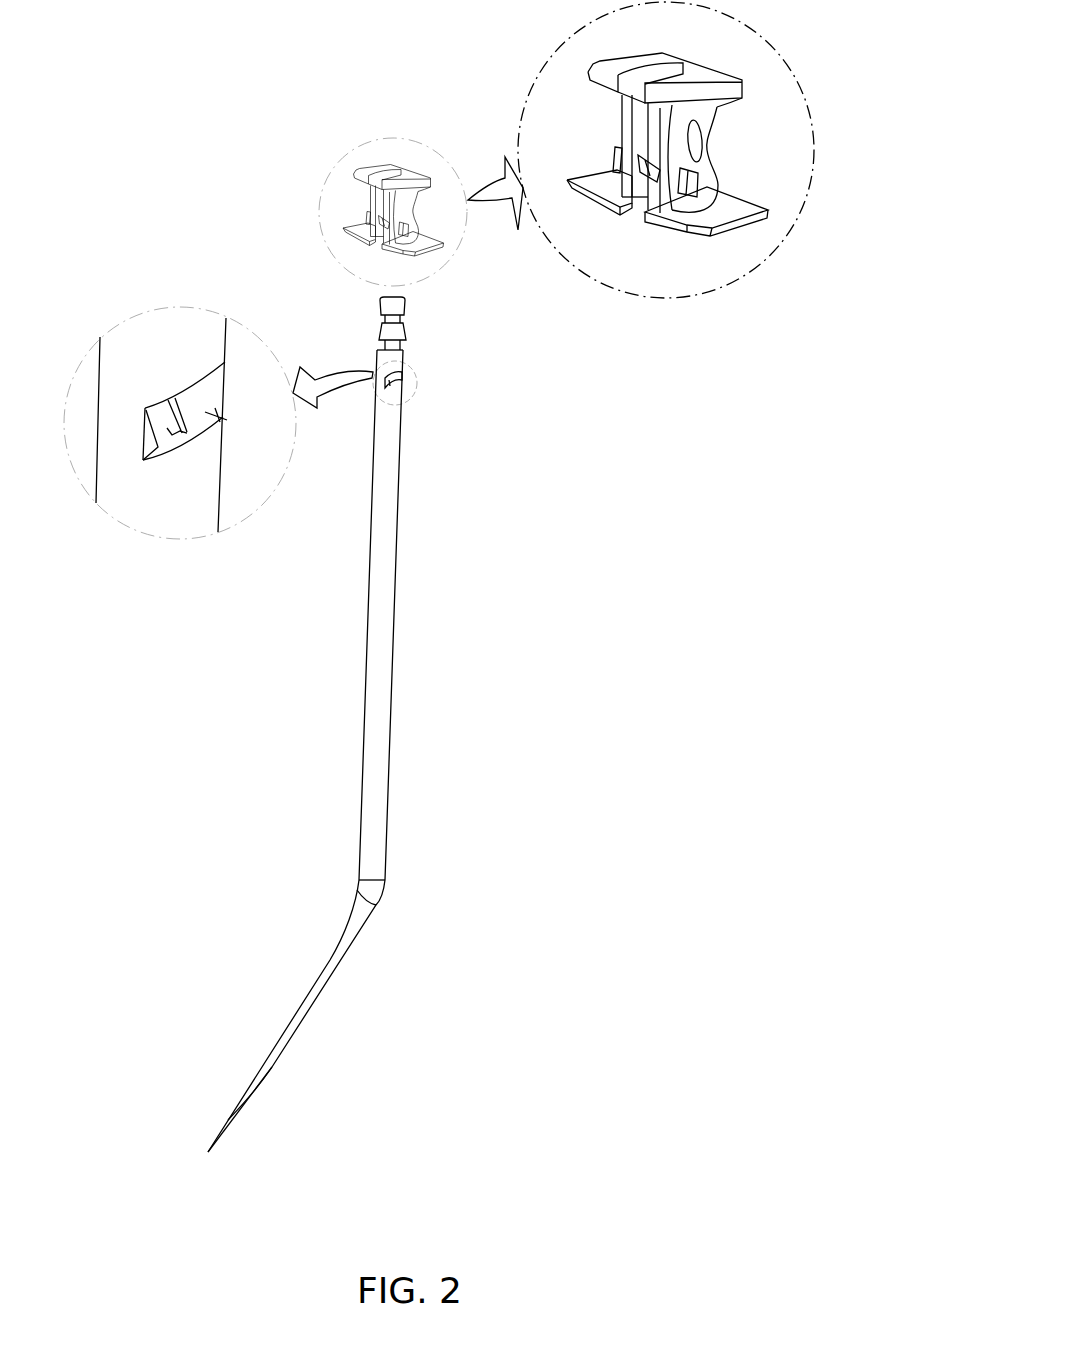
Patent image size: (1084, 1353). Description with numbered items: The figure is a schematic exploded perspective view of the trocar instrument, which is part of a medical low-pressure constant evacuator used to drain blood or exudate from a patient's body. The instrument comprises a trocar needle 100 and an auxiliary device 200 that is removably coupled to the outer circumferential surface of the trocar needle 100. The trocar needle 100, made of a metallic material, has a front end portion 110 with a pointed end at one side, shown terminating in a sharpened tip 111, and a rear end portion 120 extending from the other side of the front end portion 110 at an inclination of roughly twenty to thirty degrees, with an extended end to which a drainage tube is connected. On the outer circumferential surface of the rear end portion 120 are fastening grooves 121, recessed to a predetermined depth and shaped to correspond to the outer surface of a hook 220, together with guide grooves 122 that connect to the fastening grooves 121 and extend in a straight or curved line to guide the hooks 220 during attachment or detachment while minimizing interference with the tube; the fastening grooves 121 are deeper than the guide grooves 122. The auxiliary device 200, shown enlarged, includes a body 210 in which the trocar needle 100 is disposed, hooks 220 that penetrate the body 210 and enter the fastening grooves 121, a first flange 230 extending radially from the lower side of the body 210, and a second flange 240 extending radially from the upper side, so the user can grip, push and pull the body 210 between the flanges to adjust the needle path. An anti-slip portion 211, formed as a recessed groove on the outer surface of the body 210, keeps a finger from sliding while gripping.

The trocar needle 100 is at (311, 737).
The front end portion 110 is at (338, 1028).
The needle tip 111 is at (215, 1148).
The rear end portion 120 is at (368, 838).
The fastening groove 121 is at (170, 443).
The guide groove 122 is at (220, 415).
The auxiliary device 200 is at (744, 144).
The body 210 is at (712, 154).
The anti-slip portion 211 is at (695, 135).
The hook 220 is at (690, 181).
The first flange 230 is at (727, 208).
The second flange 240 is at (735, 92).